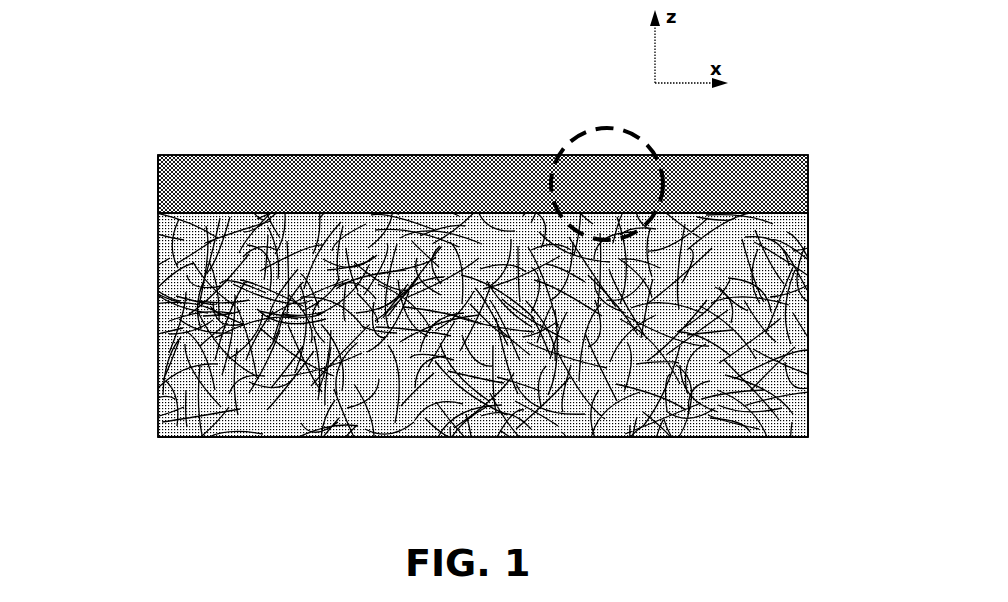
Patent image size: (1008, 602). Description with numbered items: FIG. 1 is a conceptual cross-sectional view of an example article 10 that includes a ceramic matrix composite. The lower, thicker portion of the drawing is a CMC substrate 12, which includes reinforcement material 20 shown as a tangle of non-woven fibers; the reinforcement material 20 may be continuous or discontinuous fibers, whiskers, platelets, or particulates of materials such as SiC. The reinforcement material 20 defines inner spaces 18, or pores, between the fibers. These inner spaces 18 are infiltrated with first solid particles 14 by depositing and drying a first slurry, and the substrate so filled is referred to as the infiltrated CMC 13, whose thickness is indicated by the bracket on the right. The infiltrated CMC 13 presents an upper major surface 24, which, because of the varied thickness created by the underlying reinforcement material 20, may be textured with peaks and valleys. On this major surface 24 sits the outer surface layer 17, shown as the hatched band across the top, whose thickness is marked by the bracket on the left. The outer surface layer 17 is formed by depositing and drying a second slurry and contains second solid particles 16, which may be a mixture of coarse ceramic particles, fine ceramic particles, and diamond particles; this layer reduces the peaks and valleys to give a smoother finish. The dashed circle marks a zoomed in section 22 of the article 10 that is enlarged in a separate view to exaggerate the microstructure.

The article 10 is at (106, 126).
The CMC substrate 12 is at (145, 215).
The infiltrated CMC 13 is at (813, 437).
The first solid particles 14 is at (295, 212).
The second solid particles 16 is at (332, 175).
The outer surface layer 17 is at (145, 155).
The inner spaces 18 is at (233, 437).
The reinforcement material 20 is at (665, 437).
The zoomed in section 22 is at (565, 147).
The major surface 24 is at (773, 213).